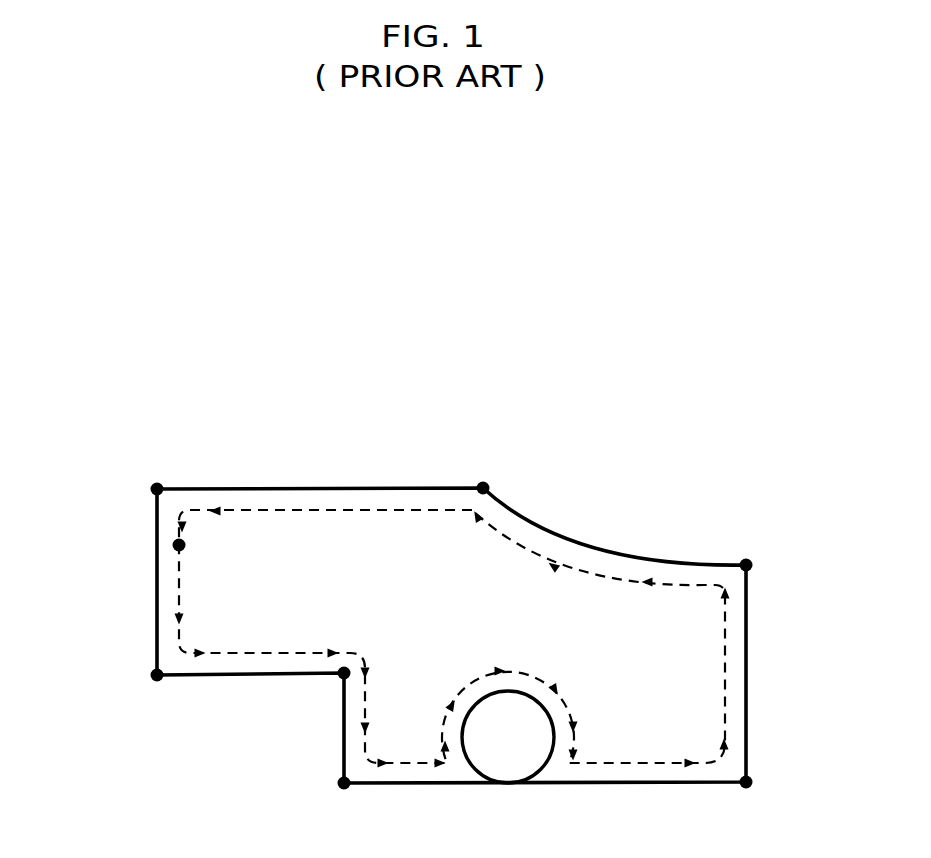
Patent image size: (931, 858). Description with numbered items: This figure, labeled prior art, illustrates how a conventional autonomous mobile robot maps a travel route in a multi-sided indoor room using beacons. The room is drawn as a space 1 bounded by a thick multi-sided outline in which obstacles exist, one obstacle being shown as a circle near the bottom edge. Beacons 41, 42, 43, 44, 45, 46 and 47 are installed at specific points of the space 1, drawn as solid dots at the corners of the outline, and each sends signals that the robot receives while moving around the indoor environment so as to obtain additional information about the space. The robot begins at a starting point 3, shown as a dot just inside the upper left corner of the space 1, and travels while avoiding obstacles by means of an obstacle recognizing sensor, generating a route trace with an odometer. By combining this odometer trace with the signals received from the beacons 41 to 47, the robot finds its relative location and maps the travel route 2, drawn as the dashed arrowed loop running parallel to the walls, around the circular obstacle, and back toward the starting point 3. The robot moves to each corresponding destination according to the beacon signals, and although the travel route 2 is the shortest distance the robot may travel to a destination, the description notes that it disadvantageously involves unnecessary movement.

The space 1 is at (157, 535).
The travel route 2 is at (513, 550).
The starting point 3 is at (179, 545).
The beacon 41 is at (157, 675).
The beacon 42 is at (344, 673).
The beacon 43 is at (344, 783).
The beacon 44 is at (746, 782).
The beacon 45 is at (746, 565).
The beacon 46 is at (483, 488).
The beacon 47 is at (157, 489).